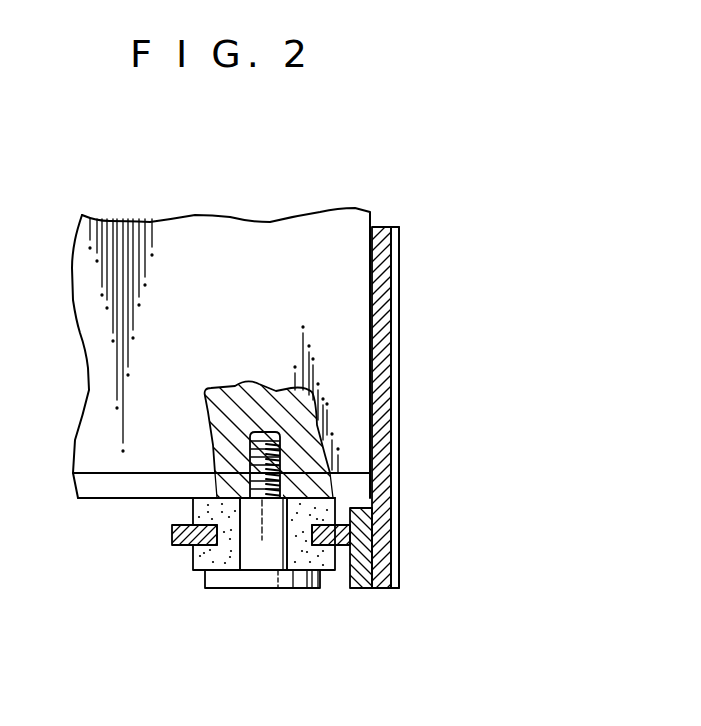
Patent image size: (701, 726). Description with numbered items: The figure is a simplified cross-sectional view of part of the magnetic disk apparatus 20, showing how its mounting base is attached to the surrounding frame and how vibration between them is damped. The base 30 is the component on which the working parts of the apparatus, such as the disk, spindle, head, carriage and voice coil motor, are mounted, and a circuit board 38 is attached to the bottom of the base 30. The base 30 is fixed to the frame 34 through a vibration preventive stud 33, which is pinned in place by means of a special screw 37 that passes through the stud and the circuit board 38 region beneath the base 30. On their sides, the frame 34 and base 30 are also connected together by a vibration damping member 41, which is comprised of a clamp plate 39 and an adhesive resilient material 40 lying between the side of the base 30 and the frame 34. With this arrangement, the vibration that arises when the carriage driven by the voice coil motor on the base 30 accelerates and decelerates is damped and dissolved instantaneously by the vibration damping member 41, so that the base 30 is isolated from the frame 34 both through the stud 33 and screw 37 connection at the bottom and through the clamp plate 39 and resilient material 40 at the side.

The magnetic disk apparatus 20 is at (539, 183).
The base 30 is at (352, 224).
The vibration preventive stud 33 is at (196, 557).
The frame 34 is at (362, 590).
The special screw 37 is at (265, 588).
The circuit board 38 is at (110, 488).
The clamp plate 39 is at (398, 283).
The adhesive resilient material 40 is at (385, 345).
The vibration damping member 41 is at (404, 427).